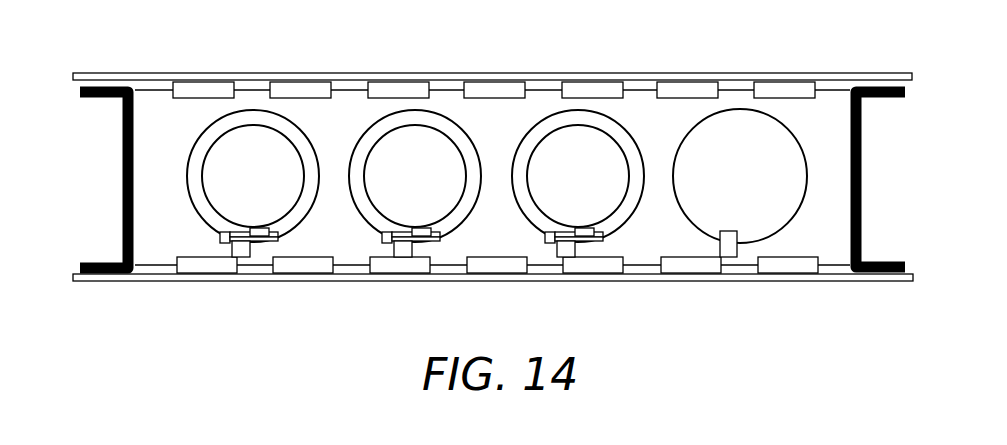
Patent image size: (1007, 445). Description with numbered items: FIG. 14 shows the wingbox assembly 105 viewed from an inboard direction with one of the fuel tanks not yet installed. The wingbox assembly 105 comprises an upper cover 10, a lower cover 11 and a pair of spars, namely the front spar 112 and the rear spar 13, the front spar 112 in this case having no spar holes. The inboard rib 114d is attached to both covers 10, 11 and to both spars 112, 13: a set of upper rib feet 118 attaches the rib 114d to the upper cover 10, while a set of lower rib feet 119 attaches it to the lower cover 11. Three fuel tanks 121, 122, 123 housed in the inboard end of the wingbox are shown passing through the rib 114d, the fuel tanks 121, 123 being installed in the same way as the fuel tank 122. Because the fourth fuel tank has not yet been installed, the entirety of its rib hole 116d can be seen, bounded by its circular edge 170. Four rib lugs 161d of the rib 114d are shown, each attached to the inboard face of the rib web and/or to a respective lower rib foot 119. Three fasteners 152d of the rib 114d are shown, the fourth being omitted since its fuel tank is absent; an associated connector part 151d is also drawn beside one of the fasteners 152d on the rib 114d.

The wingbox assembly 105 is at (236, 351).
The upper cover 10 is at (573, 73).
The lower cover 11 is at (708, 282).
The upper rib feet 118 is at (792, 95).
The lower rib feet 119 is at (206, 269).
The rear spar 13 is at (98, 178).
The front spar 112 is at (880, 192).
The fuel tank 121 is at (255, 150).
The fuel tank 122 is at (417, 128).
The fuel tank 123 is at (588, 148).
The rib hole 116d is at (740, 176).
The circular edge 170 is at (683, 145).
The fastener 152d is at (262, 238).
The connector tab 151d is at (594, 233).
The rib lug 161d is at (243, 250).
The rib 114d is at (501, 112).